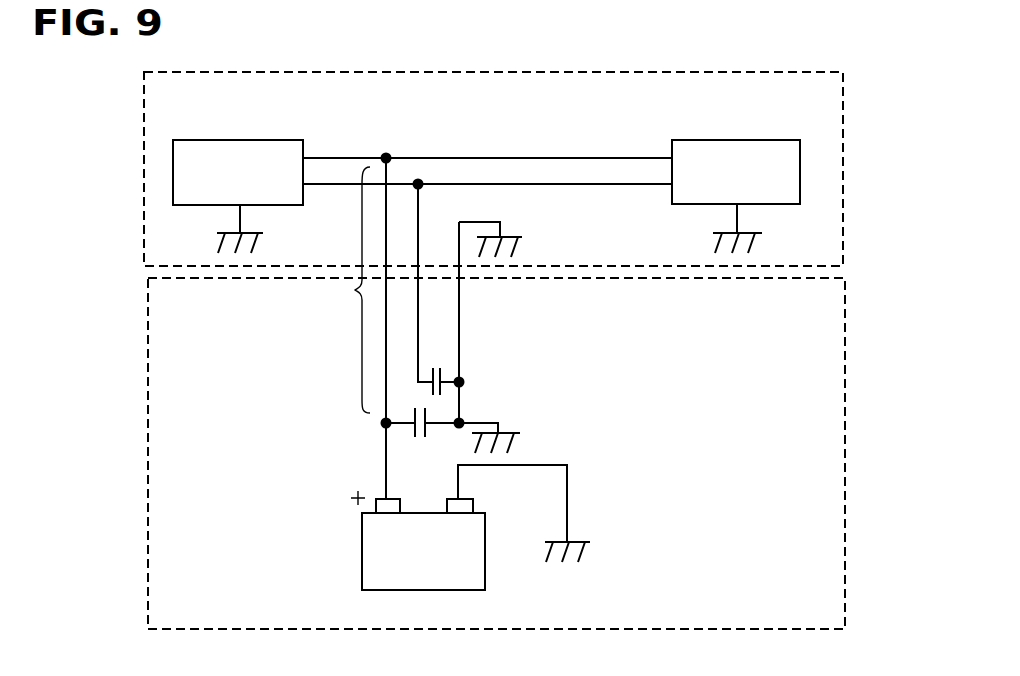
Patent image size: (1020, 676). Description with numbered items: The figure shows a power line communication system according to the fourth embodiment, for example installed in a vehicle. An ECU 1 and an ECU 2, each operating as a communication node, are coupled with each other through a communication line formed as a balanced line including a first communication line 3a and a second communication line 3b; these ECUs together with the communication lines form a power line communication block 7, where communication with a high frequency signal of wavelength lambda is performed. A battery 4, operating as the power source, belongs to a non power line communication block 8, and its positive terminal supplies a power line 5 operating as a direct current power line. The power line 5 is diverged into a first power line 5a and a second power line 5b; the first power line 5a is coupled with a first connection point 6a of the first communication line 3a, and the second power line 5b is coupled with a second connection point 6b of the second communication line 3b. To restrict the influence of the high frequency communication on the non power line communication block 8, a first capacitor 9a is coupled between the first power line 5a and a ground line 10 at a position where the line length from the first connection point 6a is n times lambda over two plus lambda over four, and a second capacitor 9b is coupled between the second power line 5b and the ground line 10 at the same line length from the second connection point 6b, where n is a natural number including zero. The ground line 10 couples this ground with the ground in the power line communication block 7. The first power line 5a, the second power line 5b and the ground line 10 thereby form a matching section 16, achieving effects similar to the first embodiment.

The electronic control unit 1 is at (228, 138).
The electronic control unit 2 is at (733, 138).
The first communication line 3a is at (660, 155).
The second communication line 3b is at (552, 186).
The battery 4 is at (362, 540).
The power line 5 is at (386, 441).
The first power line 5a is at (386, 378).
The second power line 5b is at (419, 318).
The first connection point 6a is at (386, 152).
The second connection point 6b is at (422, 187).
The power line communication block 7 is at (477, 72).
The non power line communication block 8 is at (846, 432).
The first capacitor 9a is at (420, 440).
The second capacitor 9b is at (437, 365).
The ground line 10 is at (461, 313).
The matching section 16 is at (332, 347).